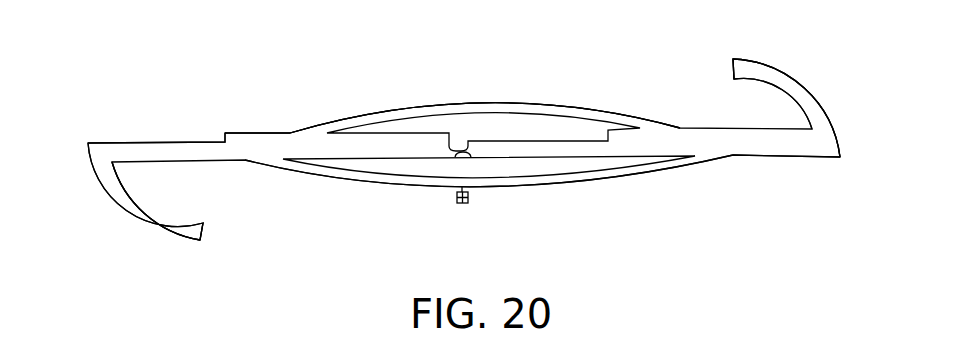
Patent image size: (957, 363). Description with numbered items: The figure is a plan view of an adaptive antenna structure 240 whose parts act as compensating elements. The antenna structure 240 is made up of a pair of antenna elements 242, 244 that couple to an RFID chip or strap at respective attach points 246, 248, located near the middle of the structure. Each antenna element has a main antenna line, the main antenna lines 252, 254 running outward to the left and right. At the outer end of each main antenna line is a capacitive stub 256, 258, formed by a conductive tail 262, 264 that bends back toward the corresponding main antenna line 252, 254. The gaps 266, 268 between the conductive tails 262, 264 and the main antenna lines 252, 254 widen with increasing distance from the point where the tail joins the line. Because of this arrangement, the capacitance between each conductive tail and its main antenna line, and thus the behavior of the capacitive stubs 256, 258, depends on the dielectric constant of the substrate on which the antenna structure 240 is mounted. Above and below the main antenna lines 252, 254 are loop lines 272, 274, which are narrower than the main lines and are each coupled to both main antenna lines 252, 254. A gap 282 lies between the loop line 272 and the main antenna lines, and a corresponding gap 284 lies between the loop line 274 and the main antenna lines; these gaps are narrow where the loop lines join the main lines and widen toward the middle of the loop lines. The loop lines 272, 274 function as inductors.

The antenna structure 240 is at (166, 119).
The antenna element 242 is at (237, 125).
The antenna element 244 is at (655, 107).
The attach point 246 is at (463, 151).
The attach point 248 is at (464, 204).
The main antenna line 252 is at (281, 130).
The main antenna line 254 is at (780, 145).
The capacitive stub 256 is at (85, 153).
The capacitive stub 258 is at (824, 161).
The conductive tail 262 is at (178, 232).
The conductive tail 264 is at (762, 73).
The gap 266 is at (150, 177).
The gap 268 is at (780, 117).
The loop line 272 is at (402, 111).
The loop line 274 is at (417, 182).
The gap 282 is at (453, 123).
The gap 284 is at (526, 165).